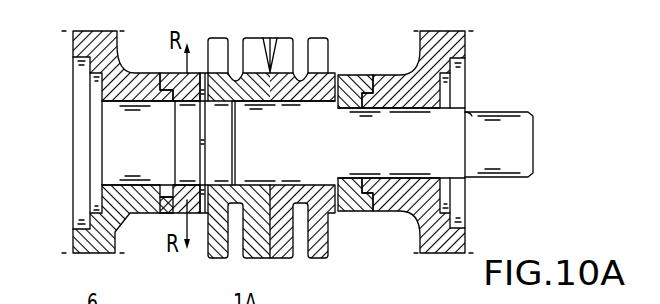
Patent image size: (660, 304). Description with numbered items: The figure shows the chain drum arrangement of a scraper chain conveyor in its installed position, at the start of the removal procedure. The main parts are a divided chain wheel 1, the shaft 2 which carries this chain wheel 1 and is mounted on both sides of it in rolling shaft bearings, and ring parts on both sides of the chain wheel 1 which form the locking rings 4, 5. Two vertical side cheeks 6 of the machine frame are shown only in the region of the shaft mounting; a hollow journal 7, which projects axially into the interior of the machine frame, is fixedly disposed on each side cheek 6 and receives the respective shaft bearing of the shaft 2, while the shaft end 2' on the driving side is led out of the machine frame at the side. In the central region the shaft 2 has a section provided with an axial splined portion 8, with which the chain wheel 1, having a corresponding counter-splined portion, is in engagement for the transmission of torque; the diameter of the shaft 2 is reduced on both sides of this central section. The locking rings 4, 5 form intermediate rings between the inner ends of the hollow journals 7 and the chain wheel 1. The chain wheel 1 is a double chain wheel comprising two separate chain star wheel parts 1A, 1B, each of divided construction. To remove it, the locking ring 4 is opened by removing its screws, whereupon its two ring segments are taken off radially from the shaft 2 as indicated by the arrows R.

The divided chain wheel 1 is at (280, 32).
The chain star wheel part 1A is at (208, 97).
The chain star wheel part 1B is at (326, 78).
The shaft 2 is at (283, 143).
The shaft end 2' is at (520, 144).
The locking ring 4 is at (168, 76).
The locking ring 5 is at (352, 88).
The side cheek 6 is at (88, 43).
The hollow journal 7 is at (137, 201).
The splined portion 8 is at (283, 102).